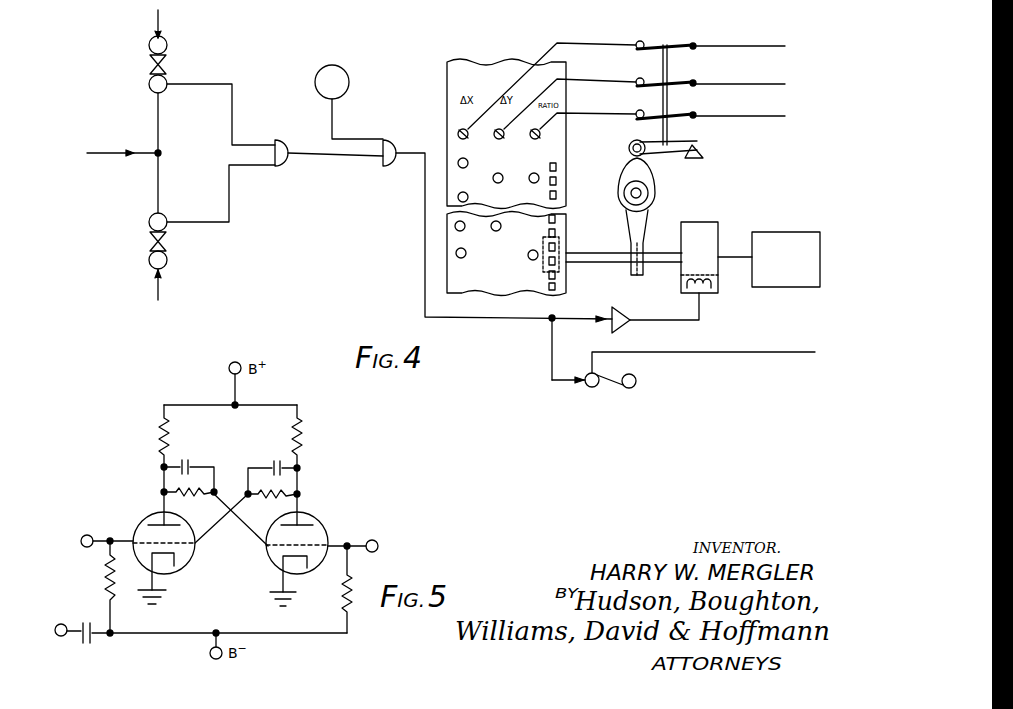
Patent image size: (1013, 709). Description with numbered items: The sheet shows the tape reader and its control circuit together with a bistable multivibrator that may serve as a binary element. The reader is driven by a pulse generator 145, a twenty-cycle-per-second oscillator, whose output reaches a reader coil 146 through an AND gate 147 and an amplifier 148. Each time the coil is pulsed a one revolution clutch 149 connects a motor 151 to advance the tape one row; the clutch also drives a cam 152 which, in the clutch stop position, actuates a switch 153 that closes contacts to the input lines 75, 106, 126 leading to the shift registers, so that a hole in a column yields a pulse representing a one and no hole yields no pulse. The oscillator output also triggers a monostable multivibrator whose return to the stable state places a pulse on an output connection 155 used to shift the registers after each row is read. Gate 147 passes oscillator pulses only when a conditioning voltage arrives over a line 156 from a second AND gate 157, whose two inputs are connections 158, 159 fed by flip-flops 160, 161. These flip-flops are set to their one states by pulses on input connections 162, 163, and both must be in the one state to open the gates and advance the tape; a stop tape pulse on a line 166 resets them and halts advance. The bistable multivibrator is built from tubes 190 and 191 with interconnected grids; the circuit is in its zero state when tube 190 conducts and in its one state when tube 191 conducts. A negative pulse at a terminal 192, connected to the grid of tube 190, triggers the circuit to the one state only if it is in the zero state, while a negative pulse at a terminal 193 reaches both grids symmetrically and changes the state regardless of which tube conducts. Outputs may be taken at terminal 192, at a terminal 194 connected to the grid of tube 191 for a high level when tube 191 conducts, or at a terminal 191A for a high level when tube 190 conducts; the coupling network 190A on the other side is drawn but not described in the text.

In FIG. 4, the input line 75 is at (752, 44).
In FIG. 4, the input line 106 is at (762, 79).
In FIG. 4, the input line 126 is at (762, 112).
In FIG. 4, the pulse generator 145 is at (315, 82).
In FIG. 4, the reader coil 146 is at (711, 284).
In FIG. 4, the AND gate 147 is at (398, 128).
In FIG. 4, the amplifier 148 is at (636, 300).
In FIG. 4, the one revolution clutch 149 is at (712, 232).
In FIG. 4, the motor 151 is at (814, 222).
In FIG. 4, the cam 152 is at (657, 192).
In FIG. 4, the switch 153 is at (686, 123).
In FIG. 4, the output connection 155 is at (706, 354).
In FIG. 4, the line 156 is at (352, 158).
In FIG. 4, the AND gate 157 is at (283, 168).
In FIG. 4, the connection 158 is at (232, 122).
In FIG. 4, the connection 159 is at (229, 168).
In FIG. 4, the flip-flop 160 is at (149, 86).
In FIG. 4, the flip-flop 161 is at (149, 229).
In FIG. 4, the input connection 162 is at (161, 30).
In FIG. 4, the input connection 163 is at (160, 292).
In FIG. 4, the line 166 is at (112, 148).
In FIG. 5, the tube 190 is at (146, 516).
In FIG. 5, the coupling network 190A is at (160, 490).
In FIG. 5, the tube 191 is at (318, 518).
In FIG. 5, the terminal 191A is at (300, 494).
In FIG. 5, the terminal 192 is at (96, 526).
In FIG. 5, the terminal 193 is at (73, 614).
In FIG. 5, the terminal 194 is at (386, 536).